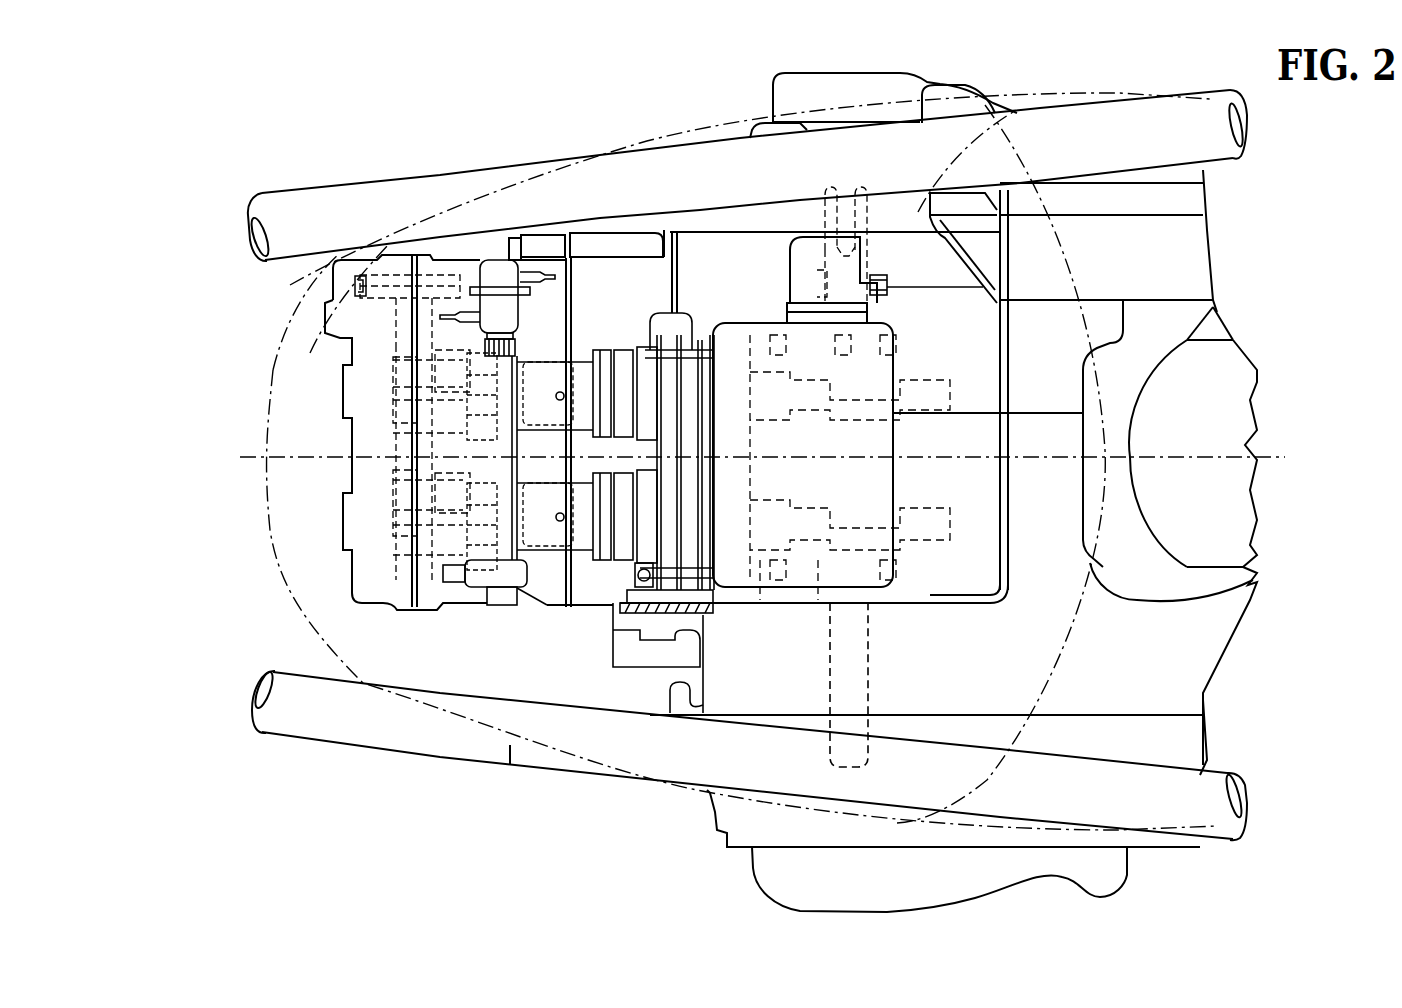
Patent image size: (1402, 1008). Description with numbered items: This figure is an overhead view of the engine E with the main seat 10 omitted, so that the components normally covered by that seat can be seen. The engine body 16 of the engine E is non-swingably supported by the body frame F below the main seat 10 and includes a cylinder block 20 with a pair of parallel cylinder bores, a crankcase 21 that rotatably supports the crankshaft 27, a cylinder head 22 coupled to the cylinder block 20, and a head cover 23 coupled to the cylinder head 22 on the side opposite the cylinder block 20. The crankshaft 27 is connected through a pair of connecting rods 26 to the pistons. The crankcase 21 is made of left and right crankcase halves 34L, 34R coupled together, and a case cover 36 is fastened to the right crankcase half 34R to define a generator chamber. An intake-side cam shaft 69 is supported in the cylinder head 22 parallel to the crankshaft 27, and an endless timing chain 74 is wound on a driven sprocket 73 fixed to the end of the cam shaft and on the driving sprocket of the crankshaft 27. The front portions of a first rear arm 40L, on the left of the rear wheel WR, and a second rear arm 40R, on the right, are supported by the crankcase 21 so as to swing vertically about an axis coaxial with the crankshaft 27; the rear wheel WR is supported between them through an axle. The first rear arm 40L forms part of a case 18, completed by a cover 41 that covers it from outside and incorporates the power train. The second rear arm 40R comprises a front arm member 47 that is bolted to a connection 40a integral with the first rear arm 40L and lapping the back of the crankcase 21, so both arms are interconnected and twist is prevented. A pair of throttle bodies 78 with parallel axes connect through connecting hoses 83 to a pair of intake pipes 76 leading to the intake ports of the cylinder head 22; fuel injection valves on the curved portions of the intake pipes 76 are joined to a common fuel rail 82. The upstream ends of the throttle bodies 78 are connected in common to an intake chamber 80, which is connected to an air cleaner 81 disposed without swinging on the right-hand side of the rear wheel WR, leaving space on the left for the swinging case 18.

The main seat 10 is at (263, 497).
The engine body 16 is at (267, 118).
The case 18 is at (673, 853).
The cylinder block 20 is at (613, 243).
The crankcase 21 is at (729, 223).
The cylinder head 22 is at (437, 258).
The head cover 23 is at (366, 262).
The connecting rods 26 is at (727, 375).
The crankshaft 27 is at (830, 745).
The right crankcase half 34R is at (980, 345).
The left crankcase half 34L is at (983, 520).
The case cover 36 is at (923, 203).
The second rear arm 40R is at (1118, 358).
The first rear arm 40L is at (697, 693).
The connection 40a is at (1060, 517).
The cover 41 is at (705, 819).
The front arm member 47 is at (1215, 318).
The intake-side cam shaft 69 is at (395, 440).
The driven sprocket 73 is at (385, 305).
The timing chain 74 is at (355, 297).
The intake pipes 76 is at (580, 375).
The throttle bodies 78 is at (695, 370).
The intake chamber 80 is at (915, 352).
The air cleaner 81 is at (1133, 275).
The fuel rail 82 is at (497, 517).
The connecting hoses 83 is at (600, 360).
The engine E is at (468, 616).
The body frame F is at (510, 763).
The rear wheel WR is at (1197, 367).